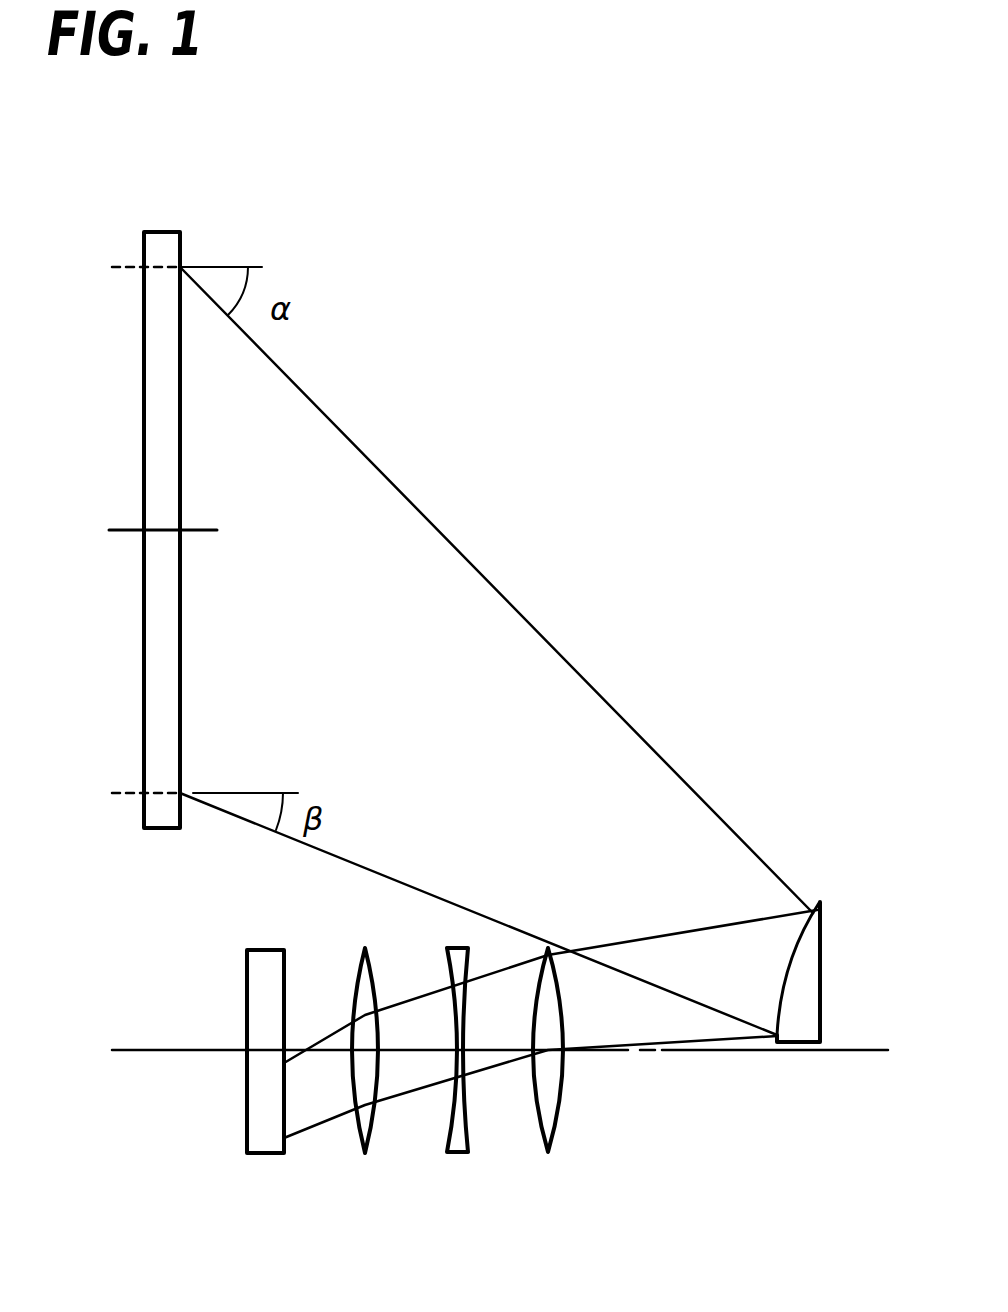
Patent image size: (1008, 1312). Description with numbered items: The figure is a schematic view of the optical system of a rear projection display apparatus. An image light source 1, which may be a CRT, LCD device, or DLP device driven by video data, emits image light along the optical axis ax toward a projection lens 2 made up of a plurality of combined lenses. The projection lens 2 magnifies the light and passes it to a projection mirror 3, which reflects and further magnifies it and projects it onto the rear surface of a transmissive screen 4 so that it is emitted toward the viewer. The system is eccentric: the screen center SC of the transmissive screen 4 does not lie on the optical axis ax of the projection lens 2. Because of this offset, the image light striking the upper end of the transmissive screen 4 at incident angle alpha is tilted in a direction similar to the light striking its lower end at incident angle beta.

The image light source 1 is at (263, 1153).
The projection lens 2 is at (560, 1170).
The projection mirror 3 is at (797, 1042).
The transmissive screen 4 is at (212, 200).
The screen center sc is at (130, 530).
The optical axis ax is at (158, 1052).